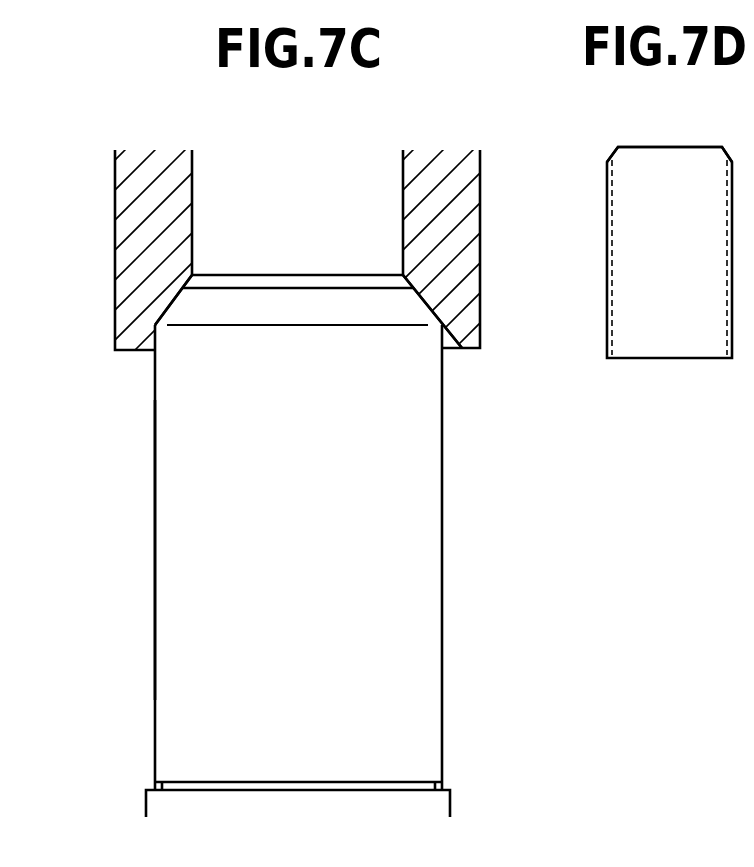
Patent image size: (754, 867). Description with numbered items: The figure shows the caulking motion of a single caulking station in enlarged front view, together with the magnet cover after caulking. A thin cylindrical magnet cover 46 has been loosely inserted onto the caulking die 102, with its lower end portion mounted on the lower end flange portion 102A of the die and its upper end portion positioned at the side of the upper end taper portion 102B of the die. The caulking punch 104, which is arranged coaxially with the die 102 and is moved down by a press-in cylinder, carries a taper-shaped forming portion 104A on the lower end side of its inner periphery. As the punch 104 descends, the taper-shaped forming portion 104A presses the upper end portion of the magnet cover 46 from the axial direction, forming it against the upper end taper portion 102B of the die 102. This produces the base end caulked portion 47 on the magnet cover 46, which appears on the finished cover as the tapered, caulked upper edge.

In FIG. 7C, the magnet cover 46 is at (155, 525).
In FIG. 7D, the magnet cover 46 is at (668, 348).
In FIG. 7C, the base end caulked portion 47 is at (173, 301).
In FIG. 7D, the base end caulked portion 47 is at (610, 152).
In FIG. 7C, the caulking die 102 is at (412, 558).
In FIG. 7C, the lower end flange portion 102A is at (443, 790).
In FIG. 7C, the upper end taper portion 102B is at (405, 283).
In FIG. 7C, the caulking punch 104 is at (488, 225).
In FIG. 7C, the taper-shaped forming portion 104A is at (452, 346).